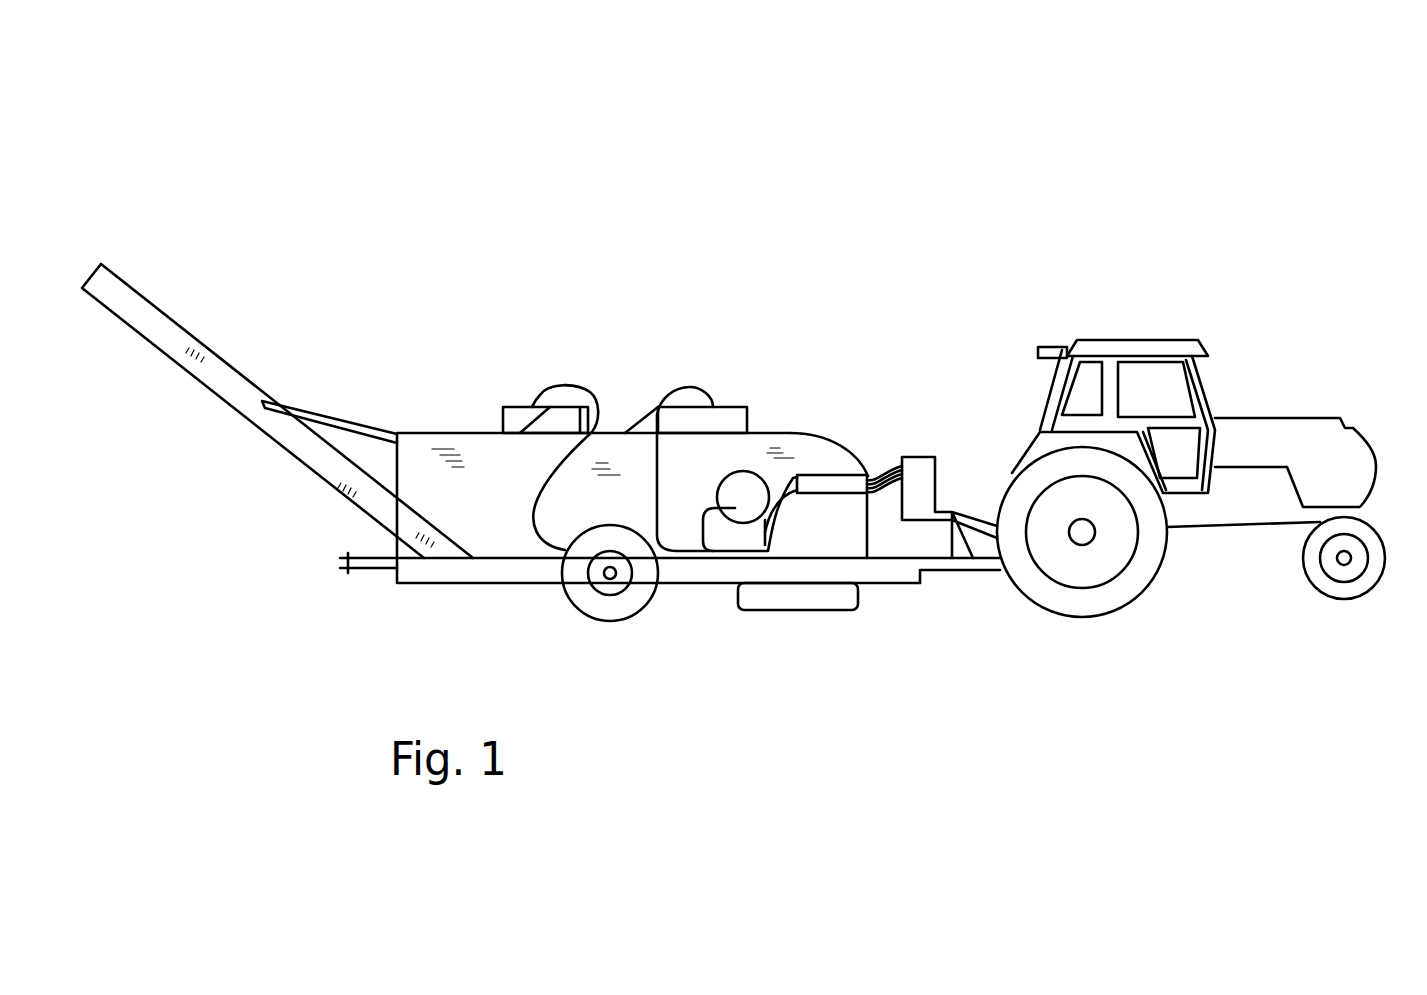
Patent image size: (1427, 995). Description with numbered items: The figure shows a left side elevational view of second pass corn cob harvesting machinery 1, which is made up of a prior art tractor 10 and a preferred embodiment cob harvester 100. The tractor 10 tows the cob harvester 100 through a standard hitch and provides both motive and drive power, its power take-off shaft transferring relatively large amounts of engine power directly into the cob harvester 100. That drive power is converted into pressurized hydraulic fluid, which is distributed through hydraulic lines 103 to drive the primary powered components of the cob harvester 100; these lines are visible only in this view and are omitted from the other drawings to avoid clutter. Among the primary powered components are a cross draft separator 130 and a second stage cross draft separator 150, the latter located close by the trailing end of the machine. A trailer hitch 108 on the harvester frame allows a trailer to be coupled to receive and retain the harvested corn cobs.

The second pass corn cob harvesting machinery 1 is at (1208, 76).
The tractor 10 is at (1192, 656).
The cob harvester 100 is at (630, 658).
The hydraulic lines 103 is at (555, 383).
The trailer hitch 108 is at (342, 560).
The cross draft separator 130 is at (730, 401).
The second stage cross draft separator 150 is at (517, 400).